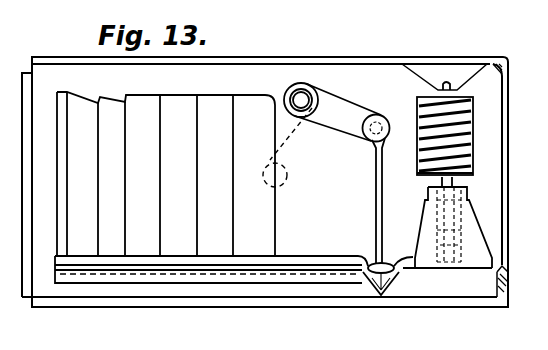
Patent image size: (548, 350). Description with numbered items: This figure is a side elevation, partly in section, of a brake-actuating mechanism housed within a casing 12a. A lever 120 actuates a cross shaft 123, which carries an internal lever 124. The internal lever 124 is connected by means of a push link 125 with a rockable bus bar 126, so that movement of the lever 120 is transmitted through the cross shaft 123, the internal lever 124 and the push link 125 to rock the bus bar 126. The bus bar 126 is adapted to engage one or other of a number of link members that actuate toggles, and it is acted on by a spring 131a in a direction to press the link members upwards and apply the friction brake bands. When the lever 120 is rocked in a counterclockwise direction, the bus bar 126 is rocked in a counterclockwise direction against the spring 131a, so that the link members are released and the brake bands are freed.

The casing frame 12a is at (397, 303).
The lever 120 is at (292, 157).
The cross shaft 123 is at (299, 90).
The internal lever 124 is at (337, 107).
The push link 125 is at (376, 198).
The rockable bus bar 126 is at (431, 218).
The spring 131a is at (456, 107).